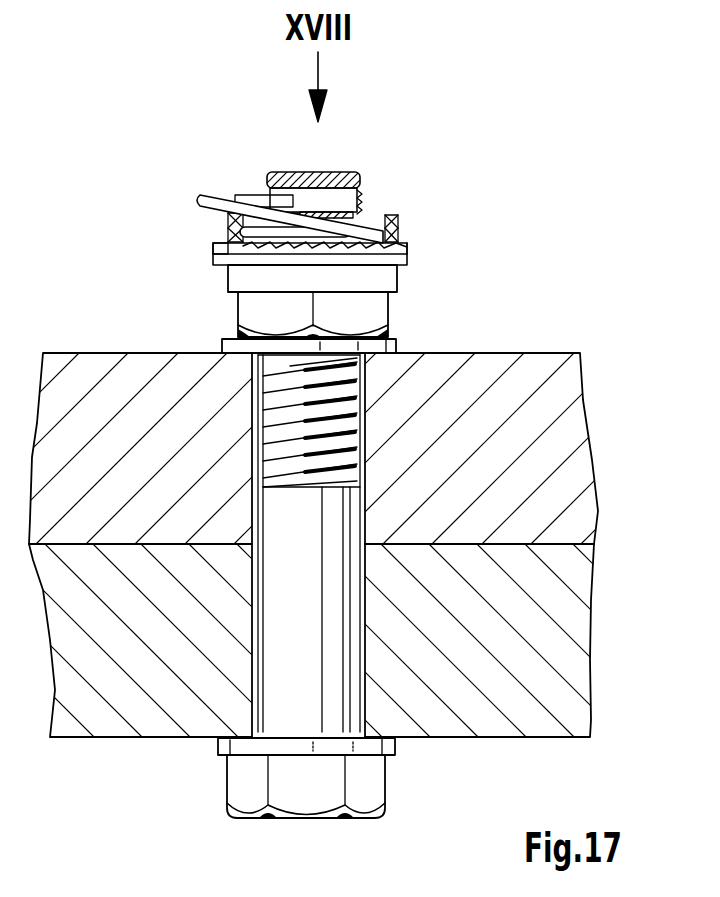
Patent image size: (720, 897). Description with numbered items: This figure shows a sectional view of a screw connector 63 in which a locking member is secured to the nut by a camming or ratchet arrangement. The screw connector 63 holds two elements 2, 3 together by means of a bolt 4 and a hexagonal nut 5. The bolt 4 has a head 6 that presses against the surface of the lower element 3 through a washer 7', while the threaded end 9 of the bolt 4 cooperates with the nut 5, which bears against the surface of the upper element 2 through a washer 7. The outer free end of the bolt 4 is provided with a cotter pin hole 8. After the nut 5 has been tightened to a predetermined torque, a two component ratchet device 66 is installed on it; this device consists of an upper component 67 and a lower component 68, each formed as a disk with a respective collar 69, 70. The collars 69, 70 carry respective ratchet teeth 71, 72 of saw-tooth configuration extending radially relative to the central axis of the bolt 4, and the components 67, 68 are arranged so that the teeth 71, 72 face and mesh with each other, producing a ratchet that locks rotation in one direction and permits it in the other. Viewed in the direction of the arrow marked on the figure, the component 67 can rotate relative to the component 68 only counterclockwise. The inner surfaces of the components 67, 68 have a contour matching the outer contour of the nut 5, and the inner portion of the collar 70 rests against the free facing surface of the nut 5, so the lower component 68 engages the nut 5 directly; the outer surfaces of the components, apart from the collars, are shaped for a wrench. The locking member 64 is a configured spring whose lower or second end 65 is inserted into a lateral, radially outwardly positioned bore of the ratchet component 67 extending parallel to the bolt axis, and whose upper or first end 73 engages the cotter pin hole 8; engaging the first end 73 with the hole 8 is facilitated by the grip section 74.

The element 2 is at (578, 444).
The element 3 is at (580, 613).
The bolt 4 is at (275, 670).
The nut 5 is at (247, 310).
The head 6 is at (373, 797).
The washer 7 is at (269, 330).
The washer 7' is at (282, 780).
The cotter pin hole 8 is at (363, 190).
The threaded end 9 is at (362, 410).
The screw connector 63 is at (620, 153).
The locking member 64 is at (195, 145).
The second end 65 is at (305, 242).
The two component ratchet device 66 is at (448, 223).
The upper component 67 is at (404, 242).
The lower component 68 is at (397, 280).
The collar 69 is at (410, 249).
The collar 70 is at (403, 261).
The ratchet teeth 71 is at (218, 252).
The ratchet teeth 72 is at (388, 216).
The first end 73 is at (263, 170).
The grip section 74 is at (197, 193).